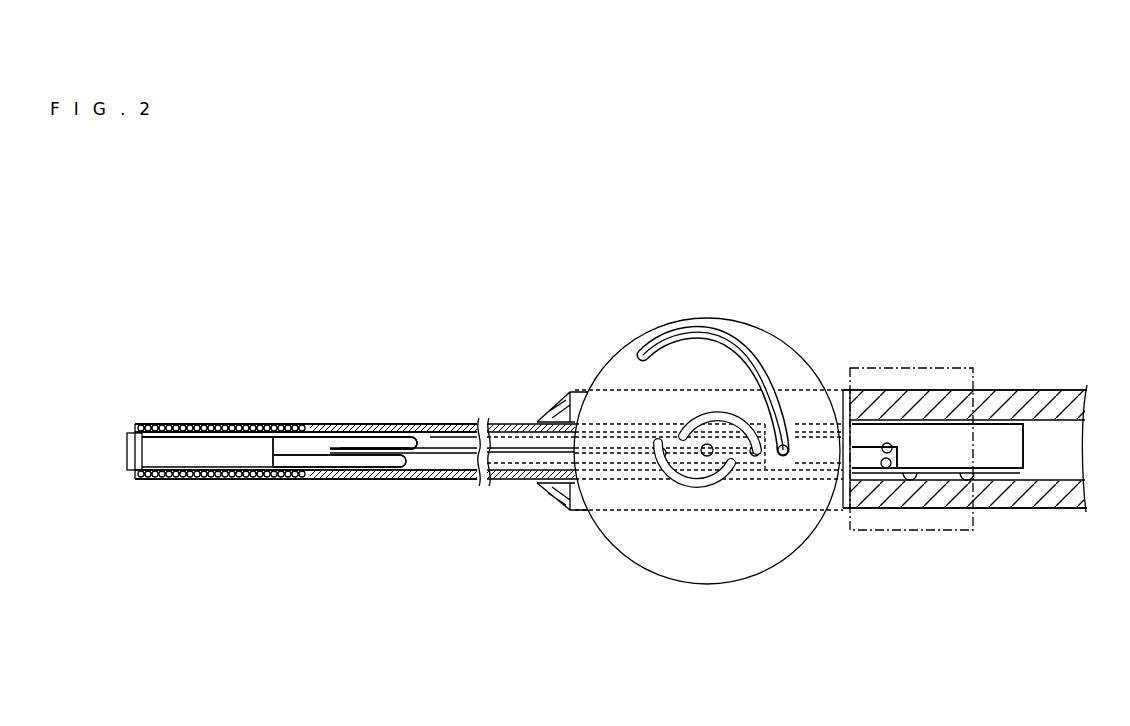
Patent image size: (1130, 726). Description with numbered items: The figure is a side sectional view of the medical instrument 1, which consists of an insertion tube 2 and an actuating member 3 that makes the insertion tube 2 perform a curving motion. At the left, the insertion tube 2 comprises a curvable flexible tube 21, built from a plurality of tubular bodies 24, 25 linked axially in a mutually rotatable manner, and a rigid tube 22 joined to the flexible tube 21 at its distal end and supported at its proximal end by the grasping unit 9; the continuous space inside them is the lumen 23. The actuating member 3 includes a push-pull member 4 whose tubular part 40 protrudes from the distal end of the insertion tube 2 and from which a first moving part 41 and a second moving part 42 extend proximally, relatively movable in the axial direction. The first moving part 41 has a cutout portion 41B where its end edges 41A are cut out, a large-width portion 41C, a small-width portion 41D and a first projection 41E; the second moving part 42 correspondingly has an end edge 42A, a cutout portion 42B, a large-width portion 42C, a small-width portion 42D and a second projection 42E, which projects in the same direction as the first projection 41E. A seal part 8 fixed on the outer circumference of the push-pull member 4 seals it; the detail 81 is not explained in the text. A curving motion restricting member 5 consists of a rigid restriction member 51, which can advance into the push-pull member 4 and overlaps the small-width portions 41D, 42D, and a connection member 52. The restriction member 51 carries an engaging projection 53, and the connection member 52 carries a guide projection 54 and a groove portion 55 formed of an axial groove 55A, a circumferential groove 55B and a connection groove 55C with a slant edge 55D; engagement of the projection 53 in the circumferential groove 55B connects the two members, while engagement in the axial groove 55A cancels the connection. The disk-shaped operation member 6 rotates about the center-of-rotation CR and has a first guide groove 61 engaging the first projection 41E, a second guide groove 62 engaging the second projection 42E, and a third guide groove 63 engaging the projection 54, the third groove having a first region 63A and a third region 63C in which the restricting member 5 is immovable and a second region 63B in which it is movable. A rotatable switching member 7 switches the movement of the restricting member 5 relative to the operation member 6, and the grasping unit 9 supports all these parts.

The medical instrument 1 is at (450, 256).
The insertion tube 2 is at (378, 355).
The flexible tube 21 is at (268, 422).
The rigid tube 22 is at (325, 430).
The lumen 23 is at (353, 440).
The tubular body 24 is at (143, 480).
The tubular body 25 is at (186, 480).
The actuating member 3 is at (838, 322).
The push-pull member 4 is at (421, 464).
The tubular part 40 is at (135, 446).
The first moving part 41 is at (505, 442).
The end edge 41A is at (444, 448).
The cutout portion 41B is at (413, 438).
The large-width portion 41C is at (457, 436).
The small-width portion 41D is at (205, 436).
The first projection 41E is at (752, 446).
The second moving part 42 is at (510, 462).
The end edge 42A is at (437, 455).
The cutout portion 42B is at (397, 462).
The large-width portion 42C is at (466, 460).
The small-width portion 42D is at (212, 478).
The second projection 42E is at (660, 460).
The curving motion restricting member 5 is at (855, 583).
The restriction member 51 is at (293, 454).
The connection member 52 is at (900, 470).
The projection 53 is at (905, 442).
The projection 54 is at (790, 451).
The groove portion 55 is at (850, 326).
The axial groove 55A is at (970, 474).
The circumferential groove 55B is at (891, 445).
The connection groove 55C is at (882, 458).
The slant edge 55D is at (922, 476).
The operation member 6 is at (655, 582).
The first guide groove 61 is at (711, 420).
The second guide groove 62 is at (702, 484).
The third guide groove 63 is at (818, 256).
The first region 63A is at (770, 406).
The second region 63B is at (753, 372).
The third region 63C is at (706, 340).
The switching member 7 is at (965, 532).
The seal part 8 is at (529, 421).
The connector housing wall 81 is at (545, 430).
The grasping unit 9 is at (984, 510).
The center-of-rotation CR is at (701, 448).